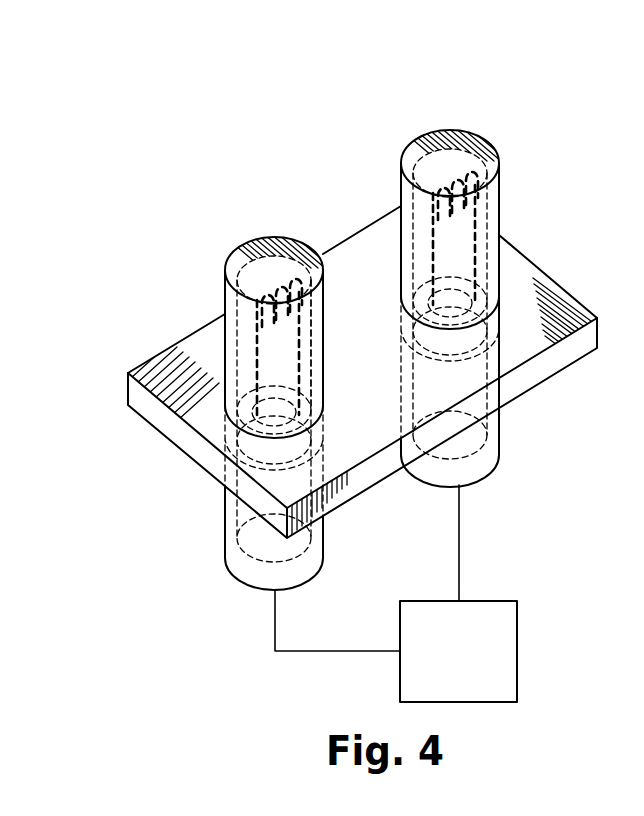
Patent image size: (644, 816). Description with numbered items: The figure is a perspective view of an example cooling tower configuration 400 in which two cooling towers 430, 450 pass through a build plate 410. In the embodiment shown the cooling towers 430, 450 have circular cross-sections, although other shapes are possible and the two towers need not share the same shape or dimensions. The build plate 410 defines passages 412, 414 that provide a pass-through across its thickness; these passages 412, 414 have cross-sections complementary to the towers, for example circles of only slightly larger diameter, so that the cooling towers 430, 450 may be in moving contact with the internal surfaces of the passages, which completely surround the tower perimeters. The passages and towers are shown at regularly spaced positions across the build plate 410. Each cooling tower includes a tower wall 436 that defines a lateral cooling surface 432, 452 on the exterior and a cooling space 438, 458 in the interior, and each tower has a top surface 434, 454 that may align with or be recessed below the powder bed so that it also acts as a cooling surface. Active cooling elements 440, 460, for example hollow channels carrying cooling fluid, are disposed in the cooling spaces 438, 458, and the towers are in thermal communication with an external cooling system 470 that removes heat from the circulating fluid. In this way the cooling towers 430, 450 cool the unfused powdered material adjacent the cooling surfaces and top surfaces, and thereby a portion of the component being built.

The cooling tower configuration 400 is at (314, 108).
The build plate 410 is at (153, 415).
The passage 412 is at (236, 416).
The passage 414 is at (500, 292).
The cooling tower 430 is at (225, 290).
The lateral cooling surface 432 is at (225, 332).
The top surface 434 is at (281, 257).
The tower wall 436 is at (312, 318).
The cooling space 438 is at (260, 283).
The cooling element 440 is at (298, 350).
The cooling tower 450 is at (498, 152).
The lateral cooling surface 452 is at (500, 200).
The top surface 454 is at (420, 157).
The cooling space 458 is at (449, 168).
The cooling element 460 is at (478, 230).
The cooling system 470 is at (517, 651).